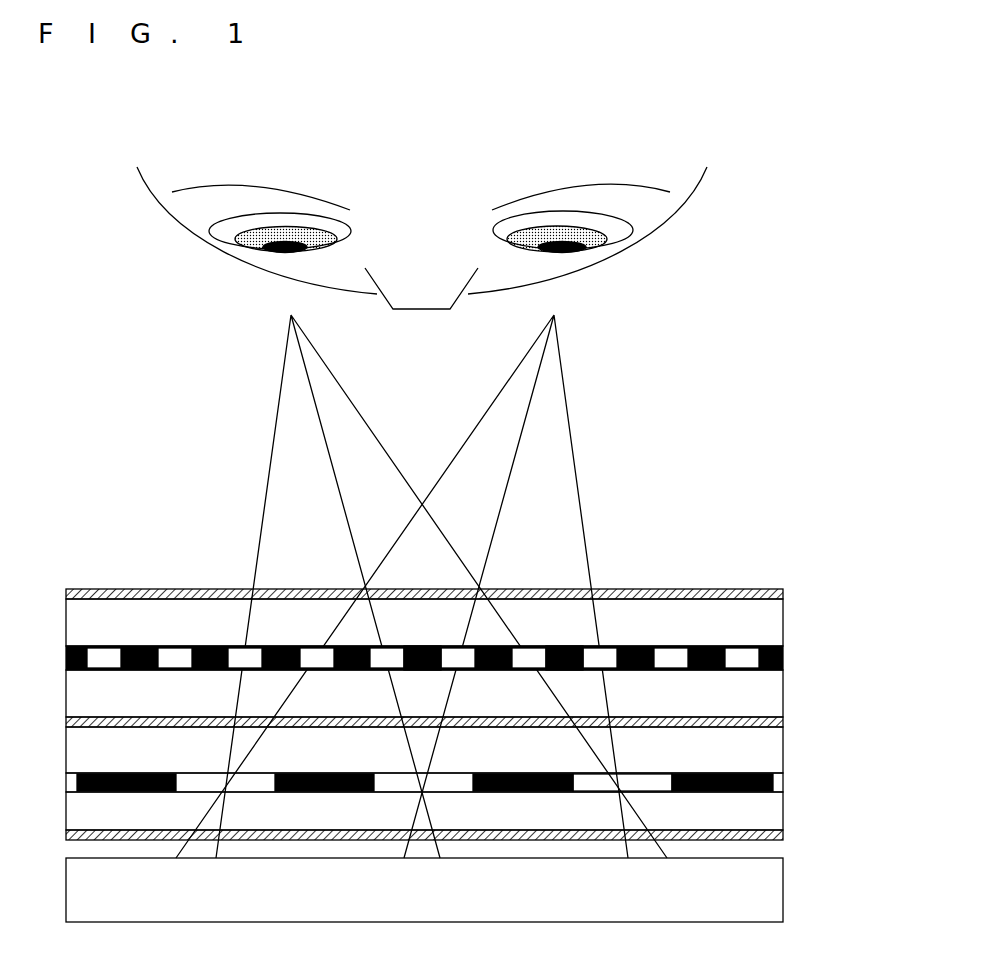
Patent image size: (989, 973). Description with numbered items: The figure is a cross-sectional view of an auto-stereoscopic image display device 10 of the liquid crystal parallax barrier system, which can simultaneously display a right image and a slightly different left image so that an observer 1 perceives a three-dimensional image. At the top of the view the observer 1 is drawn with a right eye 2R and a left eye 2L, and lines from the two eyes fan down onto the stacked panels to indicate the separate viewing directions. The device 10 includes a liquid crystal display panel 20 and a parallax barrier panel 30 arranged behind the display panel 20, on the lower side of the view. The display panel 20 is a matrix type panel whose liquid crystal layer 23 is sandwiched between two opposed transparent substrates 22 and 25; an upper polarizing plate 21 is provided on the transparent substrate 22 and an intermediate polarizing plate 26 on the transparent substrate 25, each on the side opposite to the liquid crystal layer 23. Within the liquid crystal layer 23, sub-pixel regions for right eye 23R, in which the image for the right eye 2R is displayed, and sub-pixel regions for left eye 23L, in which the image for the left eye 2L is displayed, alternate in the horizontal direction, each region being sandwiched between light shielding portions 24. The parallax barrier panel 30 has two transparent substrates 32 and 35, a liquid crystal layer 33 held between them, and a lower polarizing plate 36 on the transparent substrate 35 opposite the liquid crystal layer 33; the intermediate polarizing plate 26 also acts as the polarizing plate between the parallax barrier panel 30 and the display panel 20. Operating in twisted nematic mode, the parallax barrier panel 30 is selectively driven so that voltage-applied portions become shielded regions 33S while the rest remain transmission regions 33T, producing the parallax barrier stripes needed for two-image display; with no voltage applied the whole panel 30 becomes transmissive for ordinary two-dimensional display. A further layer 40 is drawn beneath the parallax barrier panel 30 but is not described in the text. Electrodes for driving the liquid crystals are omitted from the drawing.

The observer 1 is at (693, 213).
The right eye 2R is at (209, 229).
The left eye 2L is at (633, 230).
The auto-stereoscopic image display device 10 is at (688, 532).
The display panel 20 is at (57, 590).
The upper polarizing plate 21 is at (783, 596).
The transparent substrate 22 is at (776, 626).
The liquid crystal layer 23 is at (451, 614).
The sub-pixel region for left eye 23L is at (167, 647).
The sub-pixel region for right eye 23R is at (658, 647).
The light shielding portion 24 is at (422, 647).
The transparent substrate 25 is at (776, 692).
The intermediate polarizing plate 26 is at (783, 722).
The parallax barrier panel 30 is at (57, 725).
The transparent substrate 32 is at (777, 752).
The liquid crystal layer 33 is at (451, 771).
The shielded region 33S is at (510, 772).
The transmission region 33T is at (637, 772).
The transparent substrate 35 is at (777, 812).
The lower polarizing plate 36 is at (783, 838).
The backlight 40 is at (778, 880).